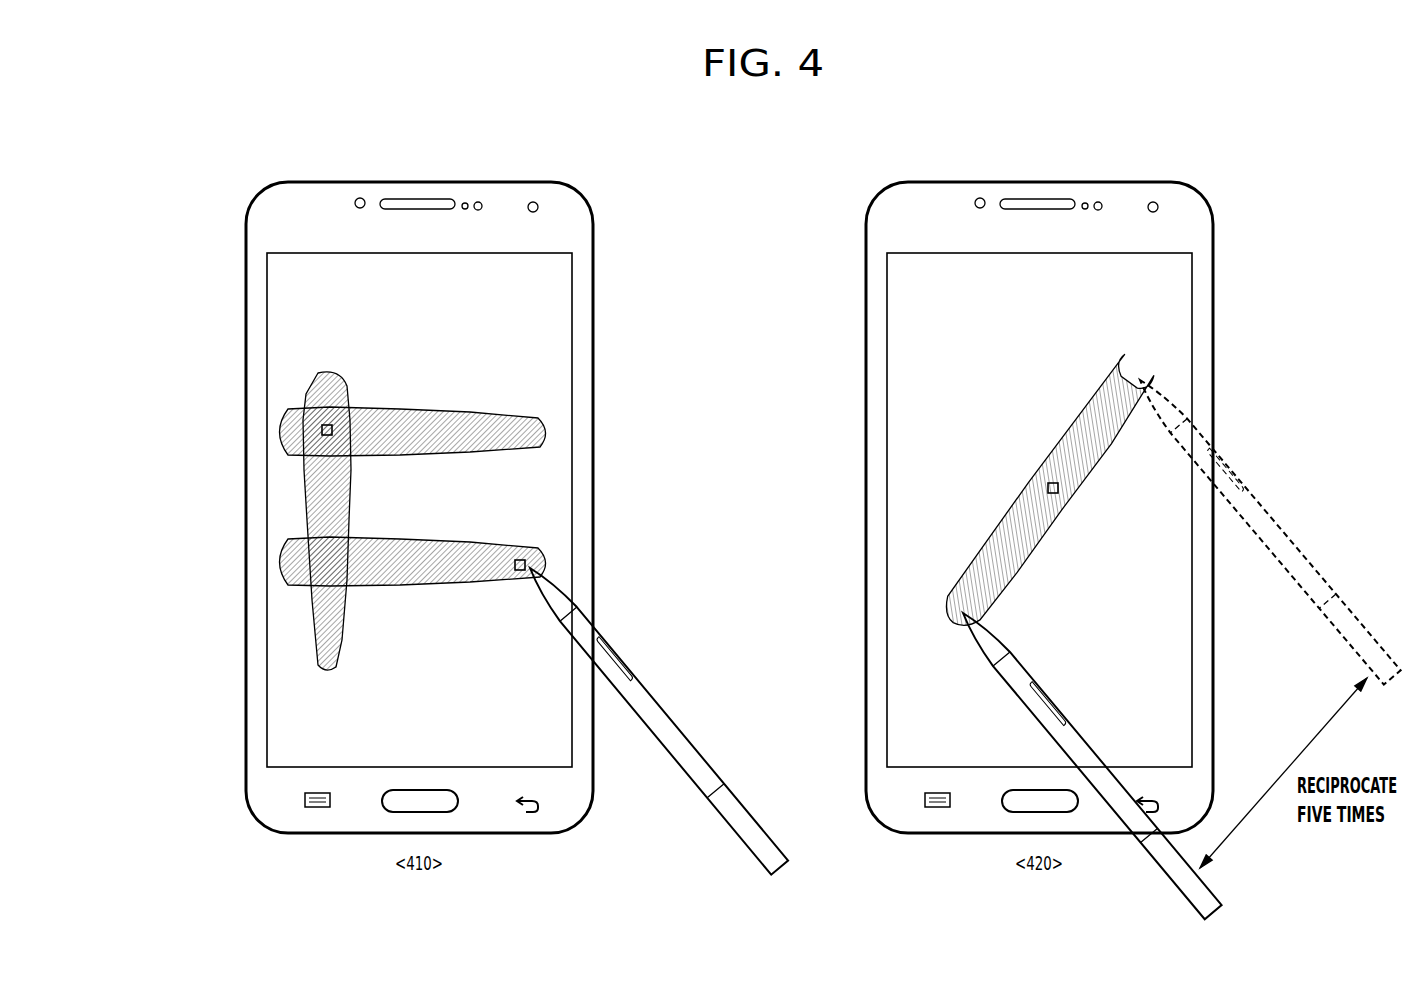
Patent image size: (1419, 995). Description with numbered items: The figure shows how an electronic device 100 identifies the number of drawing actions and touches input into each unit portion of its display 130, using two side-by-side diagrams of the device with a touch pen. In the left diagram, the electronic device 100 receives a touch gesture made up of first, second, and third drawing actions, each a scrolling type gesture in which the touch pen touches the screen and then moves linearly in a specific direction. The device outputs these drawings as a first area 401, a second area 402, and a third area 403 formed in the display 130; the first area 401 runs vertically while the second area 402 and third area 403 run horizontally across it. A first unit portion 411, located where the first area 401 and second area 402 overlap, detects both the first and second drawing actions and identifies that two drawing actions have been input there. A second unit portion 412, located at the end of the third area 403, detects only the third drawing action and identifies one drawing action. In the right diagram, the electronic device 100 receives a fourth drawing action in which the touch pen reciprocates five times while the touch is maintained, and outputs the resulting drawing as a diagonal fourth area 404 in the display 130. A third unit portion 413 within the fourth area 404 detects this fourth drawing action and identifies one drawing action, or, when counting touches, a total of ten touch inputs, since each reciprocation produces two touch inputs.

The electronic device 100 is at (578, 192).
The display 130 is at (485, 253).
The first area 401 is at (317, 376).
The second area 402 is at (285, 423).
The third area 403 is at (285, 571).
The fourth area 404 is at (1145, 363).
The first unit portion 411 is at (333, 430).
The second unit portion 412 is at (526, 565).
The third unit portion 413 is at (1048, 488).